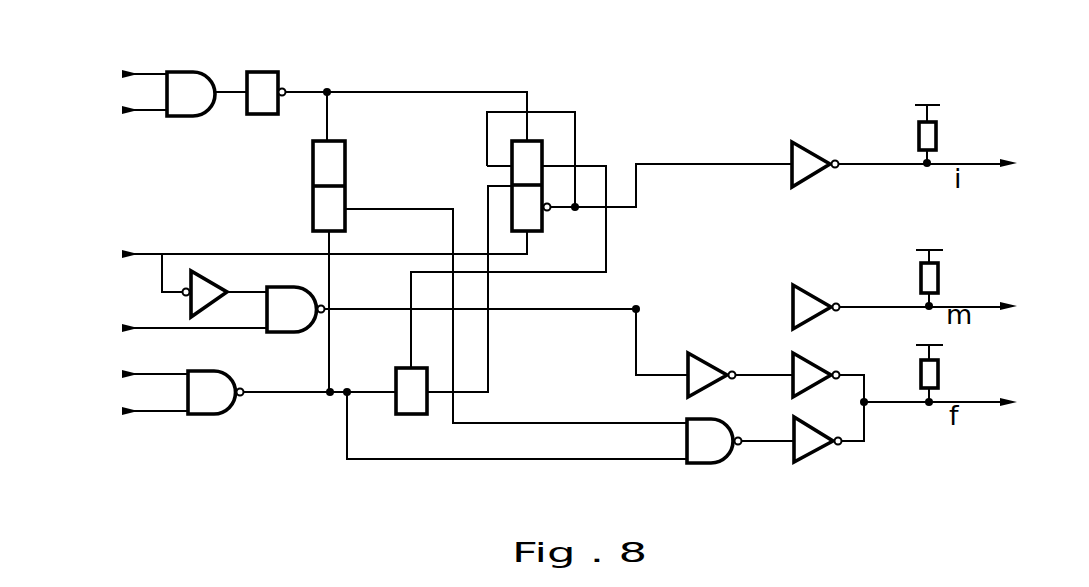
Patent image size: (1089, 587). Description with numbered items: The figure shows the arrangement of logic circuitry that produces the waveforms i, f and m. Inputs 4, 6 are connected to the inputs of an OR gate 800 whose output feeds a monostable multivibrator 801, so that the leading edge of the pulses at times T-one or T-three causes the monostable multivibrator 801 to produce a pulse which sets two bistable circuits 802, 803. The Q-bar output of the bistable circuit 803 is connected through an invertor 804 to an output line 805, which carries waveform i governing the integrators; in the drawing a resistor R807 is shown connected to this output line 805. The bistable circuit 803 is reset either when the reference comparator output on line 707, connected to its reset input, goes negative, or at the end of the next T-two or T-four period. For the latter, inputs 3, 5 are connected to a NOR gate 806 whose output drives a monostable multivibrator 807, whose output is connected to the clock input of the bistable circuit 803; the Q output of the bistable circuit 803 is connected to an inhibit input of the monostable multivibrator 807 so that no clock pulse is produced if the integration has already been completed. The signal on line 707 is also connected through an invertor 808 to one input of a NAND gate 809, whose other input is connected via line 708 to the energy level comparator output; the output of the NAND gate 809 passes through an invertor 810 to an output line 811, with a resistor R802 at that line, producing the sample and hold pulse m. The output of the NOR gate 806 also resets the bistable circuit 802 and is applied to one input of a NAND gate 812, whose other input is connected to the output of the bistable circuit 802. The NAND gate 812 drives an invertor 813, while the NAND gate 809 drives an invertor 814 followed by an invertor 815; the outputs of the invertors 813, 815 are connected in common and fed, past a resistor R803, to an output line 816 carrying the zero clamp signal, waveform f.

The OR gate 800 is at (207, 78).
The monostable multivibrator 801 is at (382, 90).
The bistable circuit 802 is at (500, 257).
The bistable circuit 803 is at (543, 154).
The invertor 804 is at (895, 149).
The output line 805 is at (1036, 165).
The NOR gate 806 is at (437, 415).
The monostable multivibrator 807 is at (414, 408).
The invertor 808 is at (214, 281).
The NAND gate 809 is at (477, 331).
The invertor 810 is at (896, 293).
The output line 811 is at (1037, 307).
The NAND gate 812 is at (739, 457).
The invertor 813 is at (828, 449).
The invertor 814 is at (688, 367).
The invertor 815 is at (793, 365).
The output line 816 is at (967, 403).
The line 707 is at (299, 261).
The line 708 is at (169, 332).
The input 4 is at (134, 74).
The input 6 is at (134, 110).
The input 3 is at (145, 374).
The input 5 is at (145, 411).
The pull-up resistor R807 is at (962, 136).
The pull-up resistor R802 is at (964, 280).
The pull-up resistor R803 is at (964, 375).